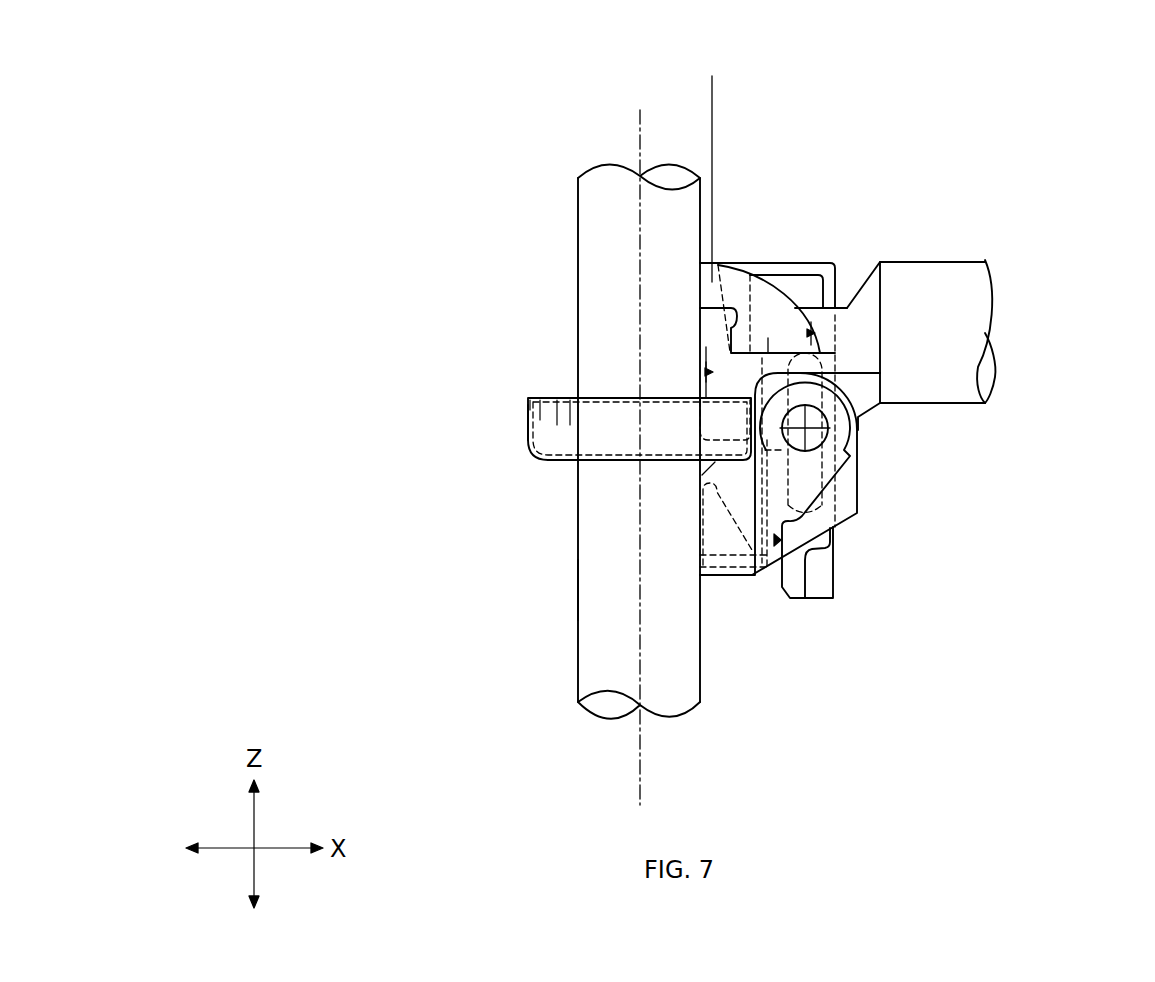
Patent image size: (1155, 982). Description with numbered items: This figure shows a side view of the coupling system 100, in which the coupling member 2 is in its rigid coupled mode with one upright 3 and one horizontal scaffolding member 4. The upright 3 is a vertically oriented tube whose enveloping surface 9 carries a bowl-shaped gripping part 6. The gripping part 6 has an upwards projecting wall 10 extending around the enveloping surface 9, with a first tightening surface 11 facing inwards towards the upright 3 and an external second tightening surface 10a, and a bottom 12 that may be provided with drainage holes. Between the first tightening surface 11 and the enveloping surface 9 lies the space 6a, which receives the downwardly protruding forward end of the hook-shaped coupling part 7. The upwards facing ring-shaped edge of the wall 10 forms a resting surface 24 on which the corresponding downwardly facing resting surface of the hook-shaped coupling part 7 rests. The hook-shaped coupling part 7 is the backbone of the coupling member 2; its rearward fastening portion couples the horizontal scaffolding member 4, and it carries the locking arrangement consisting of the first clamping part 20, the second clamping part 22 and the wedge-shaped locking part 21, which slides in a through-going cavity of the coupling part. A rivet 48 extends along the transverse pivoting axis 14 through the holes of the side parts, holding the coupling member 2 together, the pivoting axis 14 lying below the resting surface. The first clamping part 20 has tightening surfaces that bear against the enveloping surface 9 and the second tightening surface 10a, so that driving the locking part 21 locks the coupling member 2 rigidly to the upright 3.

The coupling system 100 is at (340, 244).
The coupling member 2 is at (804, 234).
The wedge-shaped locking part 21 is at (807, 290).
The scaffolding member 4 is at (913, 277).
The hook-shaped coupling part 7 is at (857, 360).
The transverse pivoting axis 14 is at (812, 430).
The rivet 48 is at (818, 438).
The first clamping part 20 is at (738, 505).
The second clamping part 22 is at (712, 76).
The upright 3 is at (600, 630).
The enveloping surface 9 is at (578, 585).
The wall 10 is at (528, 422).
The second tightening surface 10a is at (557, 460).
The gripping part 6 is at (505, 441).
The space 6a is at (557, 415).
The first tightening surface 11 is at (540, 415).
The resting surface 24 is at (530, 410).
The bottom 12 is at (570, 415).